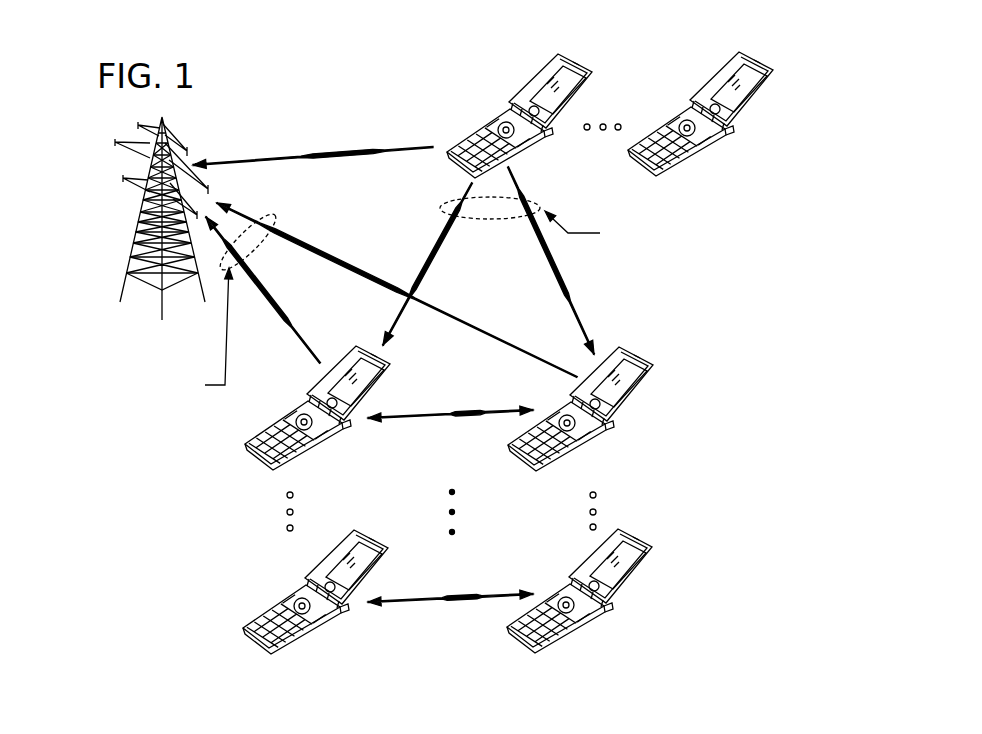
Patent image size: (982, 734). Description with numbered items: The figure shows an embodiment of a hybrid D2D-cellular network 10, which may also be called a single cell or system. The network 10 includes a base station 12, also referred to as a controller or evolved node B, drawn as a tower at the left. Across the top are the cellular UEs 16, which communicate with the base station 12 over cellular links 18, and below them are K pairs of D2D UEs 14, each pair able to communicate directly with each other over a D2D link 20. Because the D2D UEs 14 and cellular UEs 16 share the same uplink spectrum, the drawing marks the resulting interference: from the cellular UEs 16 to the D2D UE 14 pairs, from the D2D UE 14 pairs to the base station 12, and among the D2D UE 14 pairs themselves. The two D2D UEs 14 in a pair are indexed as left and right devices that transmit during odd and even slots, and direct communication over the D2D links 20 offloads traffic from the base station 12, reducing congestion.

The network 10 is at (265, 63).
The base station 12 is at (140, 217).
The D2D UEs 14 is at (303, 636).
The cellular UEs 16 is at (578, 57).
The cellular links 18 is at (403, 147).
The D2D link 20 is at (413, 602).